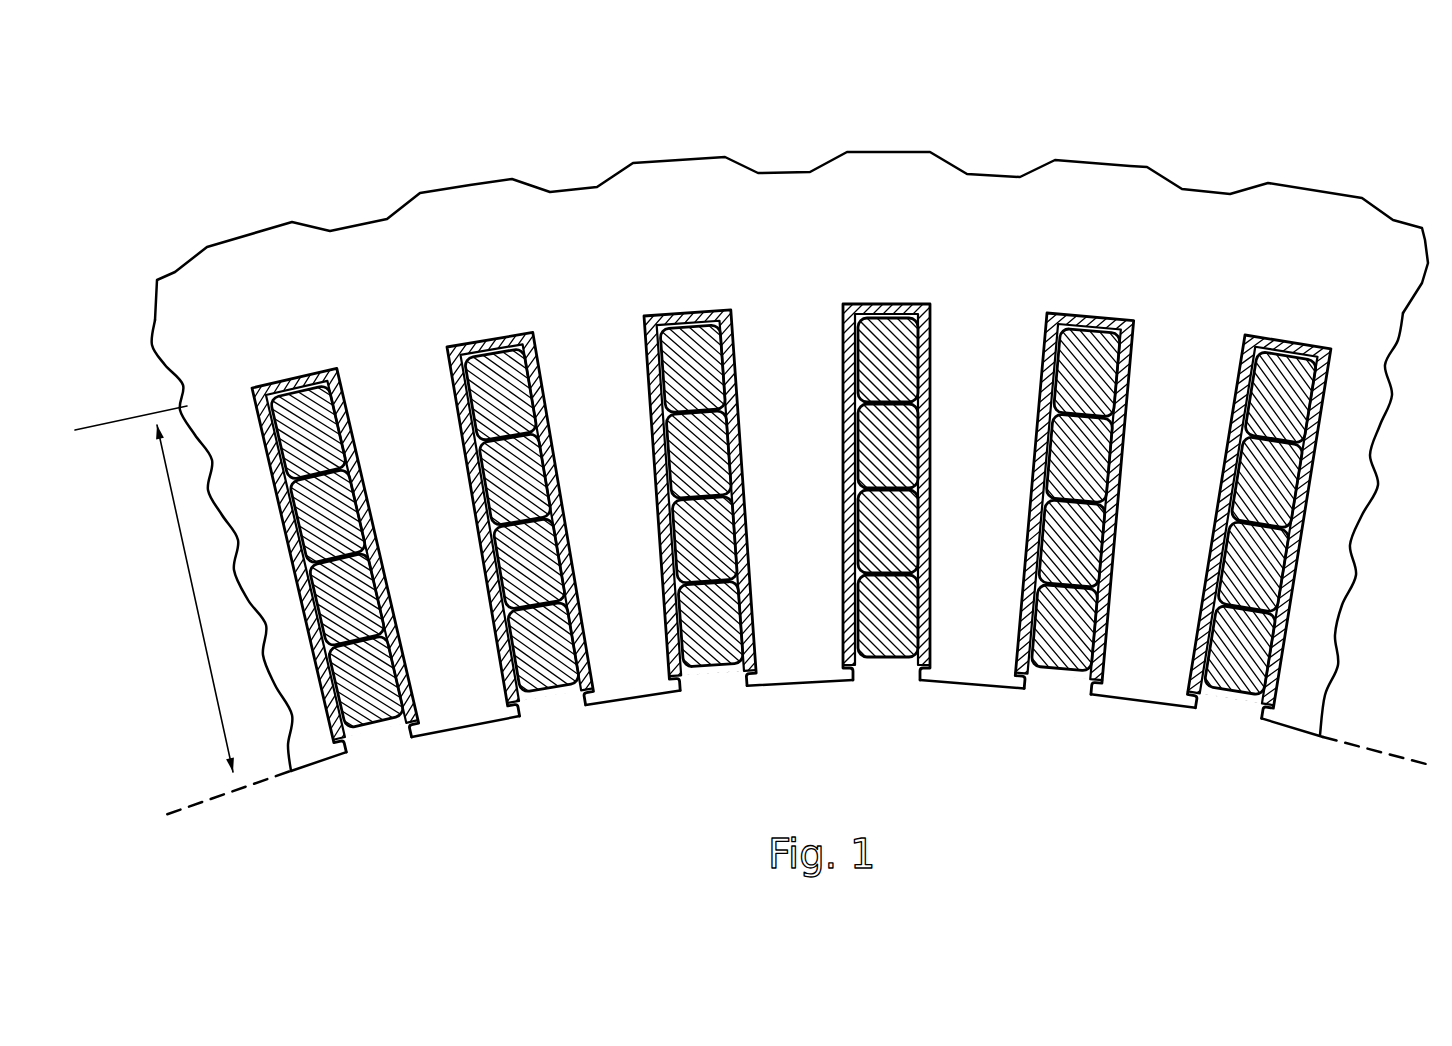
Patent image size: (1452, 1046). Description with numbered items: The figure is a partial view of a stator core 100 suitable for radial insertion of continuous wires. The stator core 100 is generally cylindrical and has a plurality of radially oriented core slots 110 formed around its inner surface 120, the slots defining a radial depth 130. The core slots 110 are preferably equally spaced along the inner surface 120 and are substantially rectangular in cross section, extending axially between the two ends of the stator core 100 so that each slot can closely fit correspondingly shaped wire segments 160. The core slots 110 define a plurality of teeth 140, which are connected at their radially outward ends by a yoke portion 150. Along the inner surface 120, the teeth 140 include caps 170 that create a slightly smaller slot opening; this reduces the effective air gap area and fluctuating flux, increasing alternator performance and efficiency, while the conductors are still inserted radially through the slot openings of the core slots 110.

The stator core 100 is at (517, 128).
The core slots 110 is at (347, 730).
The inner surface 120 is at (1375, 748).
The radial depth 130 is at (154, 589).
The teeth 140 is at (621, 690).
The yoke portion 150 is at (770, 195).
The wire segments 160 is at (1065, 654).
The caps 170 is at (845, 682).